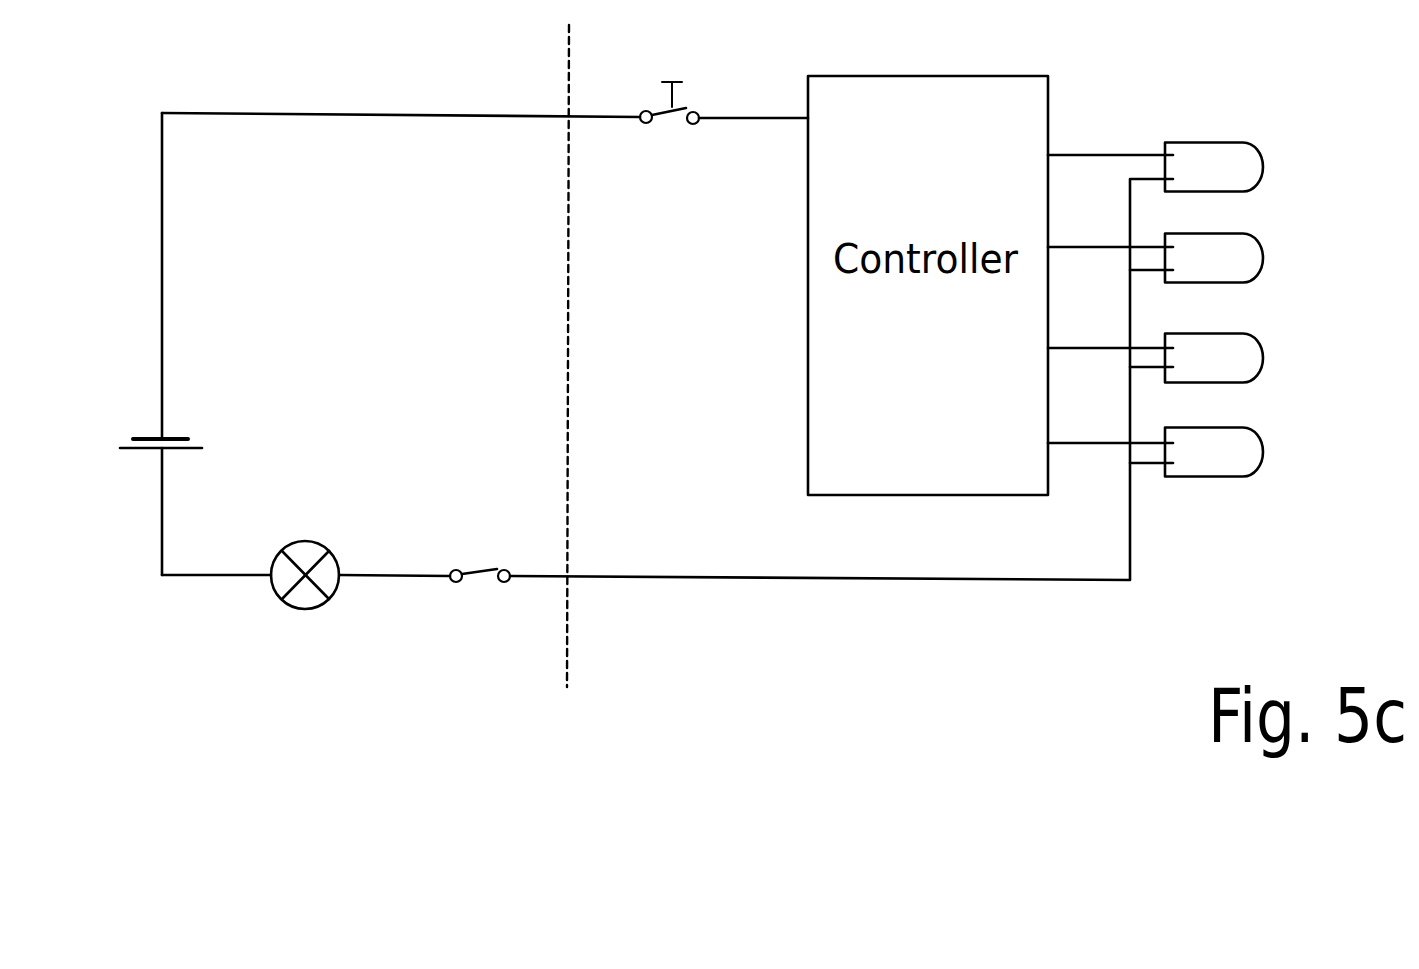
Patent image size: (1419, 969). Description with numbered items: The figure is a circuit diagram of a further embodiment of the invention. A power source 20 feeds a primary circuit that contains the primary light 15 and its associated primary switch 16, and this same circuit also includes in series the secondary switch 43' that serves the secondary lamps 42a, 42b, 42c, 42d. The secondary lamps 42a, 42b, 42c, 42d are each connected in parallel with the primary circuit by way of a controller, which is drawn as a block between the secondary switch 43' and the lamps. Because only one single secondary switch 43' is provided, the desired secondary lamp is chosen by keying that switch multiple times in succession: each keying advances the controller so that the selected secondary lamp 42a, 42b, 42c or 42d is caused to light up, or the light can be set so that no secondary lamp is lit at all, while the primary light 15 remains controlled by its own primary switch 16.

The battery / power source 20 is at (171, 419).
The primary light 15 is at (305, 553).
The primary switch 16 is at (480, 548).
The secondary switch 43' is at (673, 77).
The secondary lamp 42a is at (1245, 452).
The secondary lamp 42b is at (1252, 357).
The secondary lamp 42c is at (1240, 252).
The secondary lamp 42d is at (1252, 163).